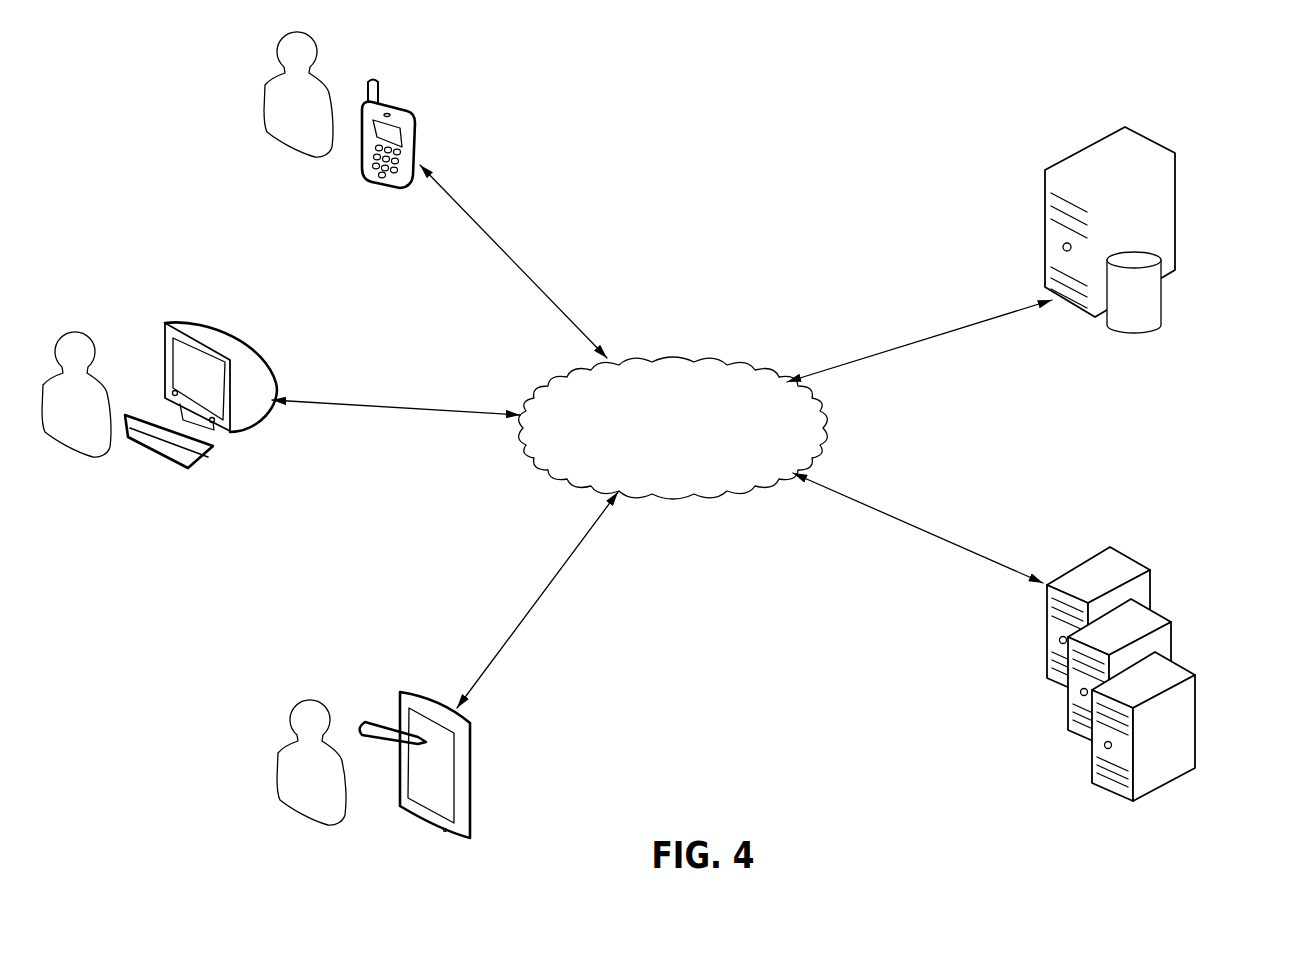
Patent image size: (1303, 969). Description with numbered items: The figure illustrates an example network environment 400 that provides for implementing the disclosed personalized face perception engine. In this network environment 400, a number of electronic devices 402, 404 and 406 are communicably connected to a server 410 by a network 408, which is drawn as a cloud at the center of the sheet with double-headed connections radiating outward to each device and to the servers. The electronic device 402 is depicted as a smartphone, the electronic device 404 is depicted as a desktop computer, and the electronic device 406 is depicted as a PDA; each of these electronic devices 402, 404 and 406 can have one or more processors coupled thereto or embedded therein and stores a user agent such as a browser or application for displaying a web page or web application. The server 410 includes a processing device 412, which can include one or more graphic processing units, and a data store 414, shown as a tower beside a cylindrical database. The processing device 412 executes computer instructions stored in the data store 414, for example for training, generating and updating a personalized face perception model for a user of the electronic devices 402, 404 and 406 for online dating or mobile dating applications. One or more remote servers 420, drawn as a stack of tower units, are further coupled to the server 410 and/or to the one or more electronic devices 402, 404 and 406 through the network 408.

The network environment 400 is at (797, 95).
The electronic device 402 is at (403, 103).
The electronic device 404 is at (273, 396).
The electronic device 406 is at (410, 690).
The network 408 is at (672, 357).
The server 410 is at (1049, 330).
The processing device 412 is at (1148, 137).
The data store 414 is at (1162, 327).
The remote servers 420 is at (1044, 765).